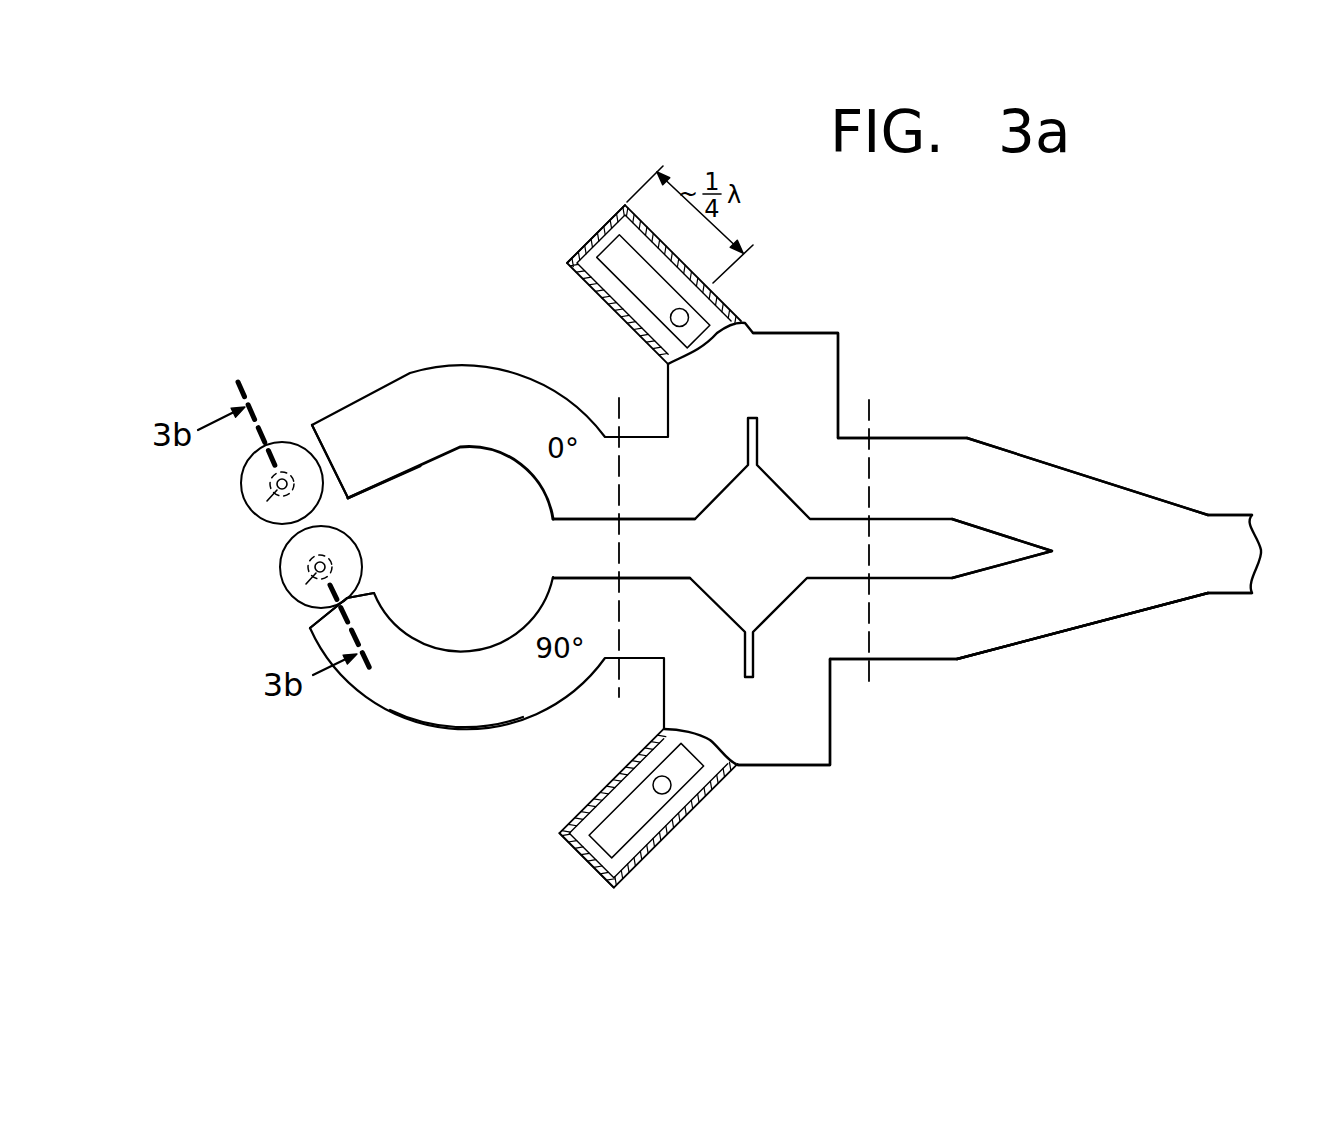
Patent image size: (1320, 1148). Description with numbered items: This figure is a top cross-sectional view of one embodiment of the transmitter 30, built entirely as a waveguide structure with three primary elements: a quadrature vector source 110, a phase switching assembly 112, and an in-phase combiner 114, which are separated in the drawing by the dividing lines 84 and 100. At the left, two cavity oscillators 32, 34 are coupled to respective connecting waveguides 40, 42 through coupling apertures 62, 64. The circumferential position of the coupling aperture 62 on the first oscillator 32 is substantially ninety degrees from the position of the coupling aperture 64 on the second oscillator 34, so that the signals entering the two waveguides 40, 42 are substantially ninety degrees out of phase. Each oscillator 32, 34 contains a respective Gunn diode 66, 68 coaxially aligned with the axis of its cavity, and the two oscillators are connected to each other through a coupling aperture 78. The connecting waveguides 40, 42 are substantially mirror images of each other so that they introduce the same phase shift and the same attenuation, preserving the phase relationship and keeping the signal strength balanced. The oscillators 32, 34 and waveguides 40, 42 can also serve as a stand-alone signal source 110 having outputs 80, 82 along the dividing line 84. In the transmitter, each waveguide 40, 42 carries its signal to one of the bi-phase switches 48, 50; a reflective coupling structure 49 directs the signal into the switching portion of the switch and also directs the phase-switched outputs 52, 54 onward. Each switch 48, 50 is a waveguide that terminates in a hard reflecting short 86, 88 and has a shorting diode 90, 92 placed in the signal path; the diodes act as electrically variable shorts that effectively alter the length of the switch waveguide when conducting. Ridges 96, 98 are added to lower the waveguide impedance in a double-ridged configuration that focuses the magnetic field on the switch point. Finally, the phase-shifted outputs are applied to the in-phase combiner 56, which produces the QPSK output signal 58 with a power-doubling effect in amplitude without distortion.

The transmitter 30 is at (984, 363).
The first cavity oscillator 32 is at (255, 478).
The second cavity oscillator 34 is at (295, 570).
The first connecting waveguide 40 is at (410, 388).
The second connecting waveguide 42 is at (497, 693).
The first bi-phase switch 48 is at (590, 297).
The reflective coupling structure 49 is at (818, 357).
The second bi-phase switch 50 is at (653, 856).
The first phase-switched output 52 is at (865, 477).
The second phase-switched output 54 is at (867, 678).
The in-phase combiner 56 is at (1088, 498).
The QPSK output signal 58 is at (1210, 550).
The first coupling aperture 62 is at (313, 438).
The second coupling aperture 64 is at (352, 595).
The first Gunn diode 66 is at (268, 500).
The second Gunn diode 68 is at (310, 580).
The coupling aperture 78 is at (317, 520).
The first signal source output 80 is at (605, 477).
The second signal source output 82 is at (625, 618).
The dividing line 84 is at (615, 678).
The first hard reflecting short 86 is at (598, 235).
The second hard reflecting short 88 is at (582, 858).
The first shorting diode 90 is at (688, 311).
The second shorting diode 92 is at (662, 792).
The first ridge 96 is at (660, 288).
The second ridge 98 is at (613, 833).
The dividing line 100 is at (867, 678).
The quadrature vector source 110 is at (445, 735).
The phase switching assembly 112 is at (807, 771).
The in-phase combiner 114 is at (1020, 646).